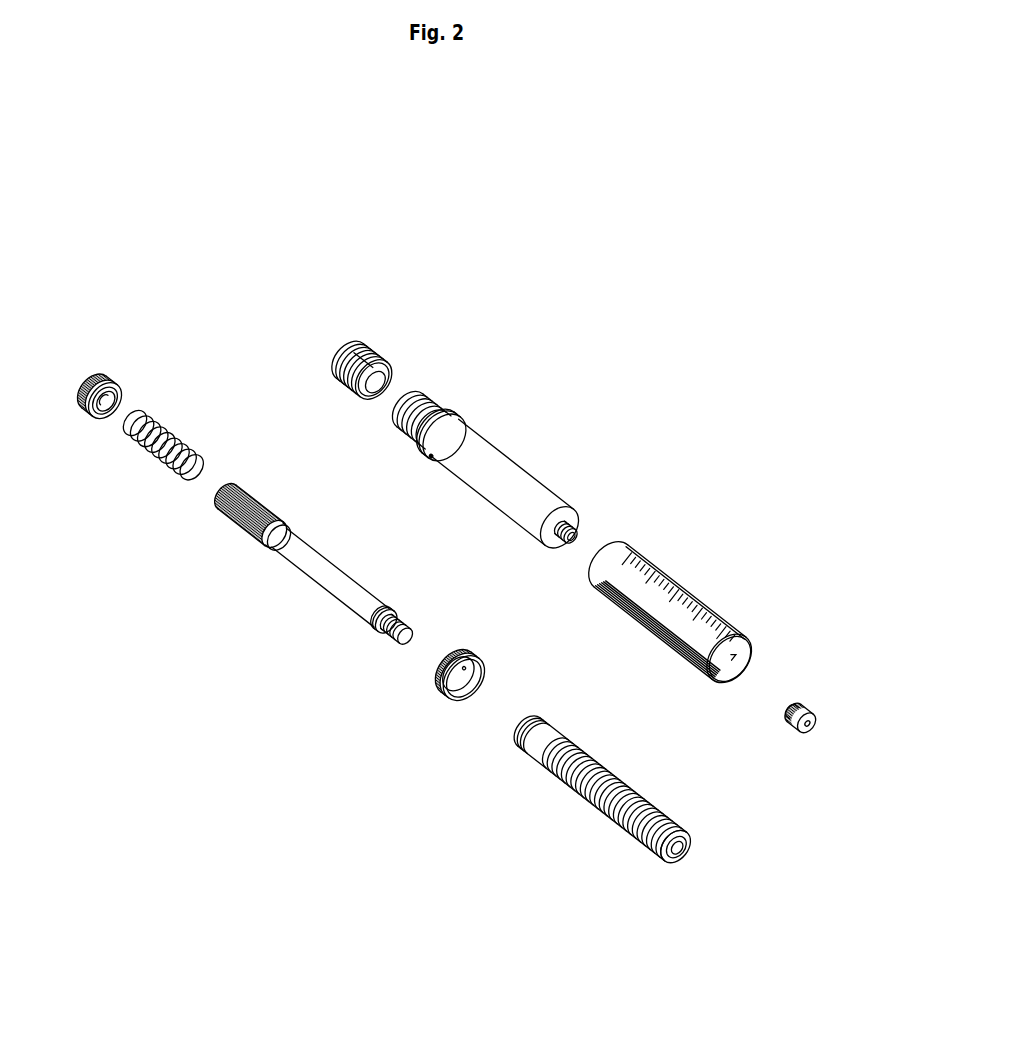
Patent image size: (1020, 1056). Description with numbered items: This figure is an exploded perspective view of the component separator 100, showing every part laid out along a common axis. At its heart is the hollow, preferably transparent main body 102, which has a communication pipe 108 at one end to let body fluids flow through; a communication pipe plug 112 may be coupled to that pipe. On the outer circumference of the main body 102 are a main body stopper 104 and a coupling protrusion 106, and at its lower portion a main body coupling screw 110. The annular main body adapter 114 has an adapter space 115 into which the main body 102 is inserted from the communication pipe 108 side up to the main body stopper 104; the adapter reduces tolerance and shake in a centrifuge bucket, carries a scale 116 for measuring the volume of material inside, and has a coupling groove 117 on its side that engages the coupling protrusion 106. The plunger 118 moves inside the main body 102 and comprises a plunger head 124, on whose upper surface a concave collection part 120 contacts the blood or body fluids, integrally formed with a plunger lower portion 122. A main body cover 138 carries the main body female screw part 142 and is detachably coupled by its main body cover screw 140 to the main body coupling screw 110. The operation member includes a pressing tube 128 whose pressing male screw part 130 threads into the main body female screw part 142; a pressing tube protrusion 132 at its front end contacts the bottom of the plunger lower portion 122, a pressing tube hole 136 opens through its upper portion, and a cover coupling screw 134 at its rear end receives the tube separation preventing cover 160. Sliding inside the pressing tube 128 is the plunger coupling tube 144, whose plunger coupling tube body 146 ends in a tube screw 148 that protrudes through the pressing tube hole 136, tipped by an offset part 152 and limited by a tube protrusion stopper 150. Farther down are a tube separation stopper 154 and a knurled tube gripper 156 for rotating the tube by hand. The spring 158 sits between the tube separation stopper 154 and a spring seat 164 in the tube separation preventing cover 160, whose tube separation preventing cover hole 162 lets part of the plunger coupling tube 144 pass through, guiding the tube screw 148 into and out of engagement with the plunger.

The component separator 100 is at (604, 258).
The main body 102 is at (515, 461).
The main body stopper 104 is at (458, 413).
The coupling protrusion 106 is at (431, 462).
The communication pipe 108 is at (577, 529).
The main body coupling screw 110 is at (428, 392).
The communication pipe plug 112 is at (795, 735).
The main body adapter 114 is at (718, 688).
The adapter space 115 is at (751, 652).
The scale 116 is at (693, 609).
The coupling groove 117 is at (596, 597).
The plunger 118 is at (392, 333).
The collection part 120 is at (378, 398).
The plunger lower portion 122 is at (337, 366).
The plunger head 124 is at (387, 360).
The pressing tube 128 is at (612, 745).
The pressing male screw part 130 is at (648, 797).
The pressing tube protrusion 132 is at (663, 866).
The cover coupling screw 134 is at (520, 751).
The pressing tube hole 136 is at (688, 851).
The main body cover 138 is at (441, 706).
The main body cover screw 140 is at (461, 709).
The main body female screw part 142 is at (488, 687).
The plunger coupling tube 144 is at (300, 598).
The plunger coupling tube body 146 is at (313, 551).
The tube screw 148 is at (430, 610).
The tube protrusion stopper 150 is at (373, 632).
The offset part 152 is at (400, 647).
The tube separation stopper 154 is at (282, 529).
The tube gripper 156 is at (248, 492).
The spring 158 is at (173, 432).
The tube separation preventing cover 160 is at (85, 416).
The tube separation preventing cover hole 162 is at (120, 393).
The spring seat 164 is at (101, 414).